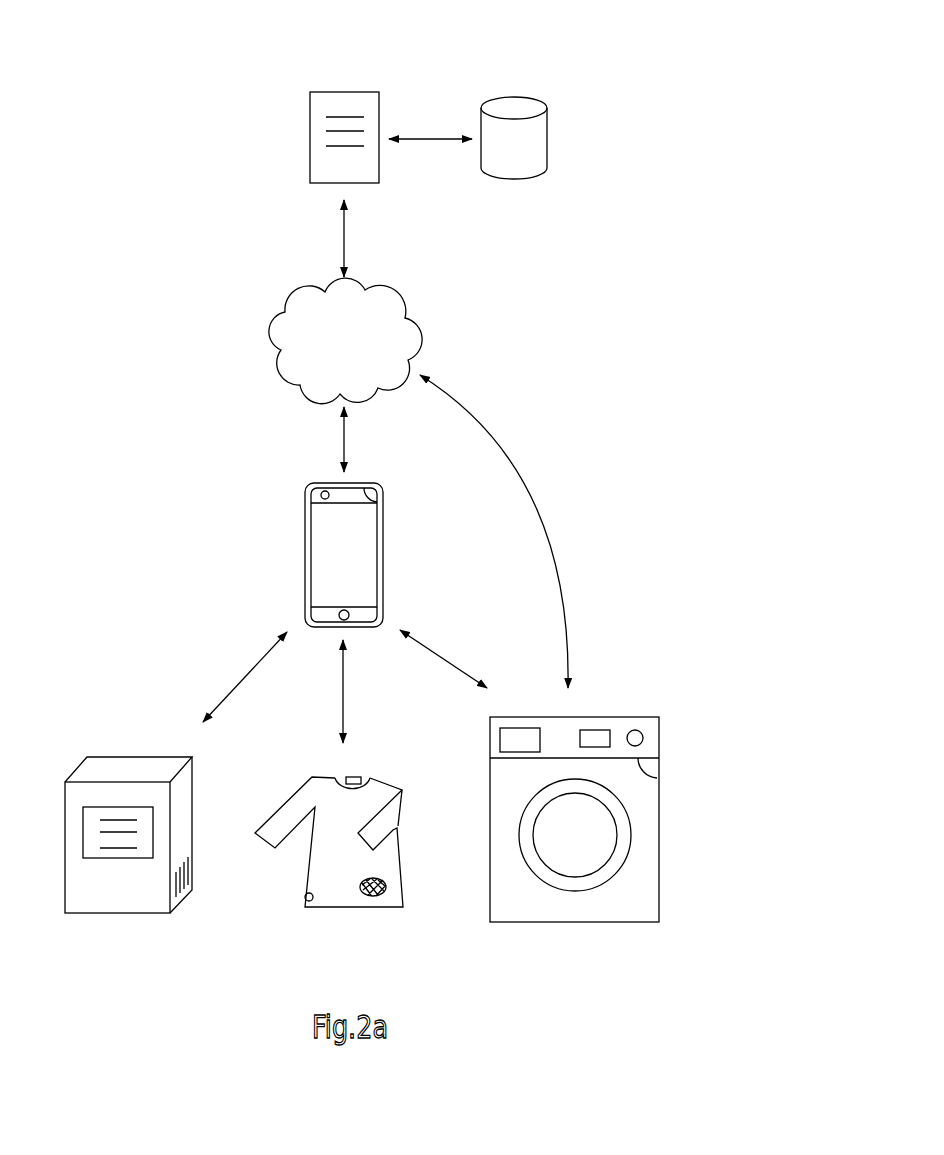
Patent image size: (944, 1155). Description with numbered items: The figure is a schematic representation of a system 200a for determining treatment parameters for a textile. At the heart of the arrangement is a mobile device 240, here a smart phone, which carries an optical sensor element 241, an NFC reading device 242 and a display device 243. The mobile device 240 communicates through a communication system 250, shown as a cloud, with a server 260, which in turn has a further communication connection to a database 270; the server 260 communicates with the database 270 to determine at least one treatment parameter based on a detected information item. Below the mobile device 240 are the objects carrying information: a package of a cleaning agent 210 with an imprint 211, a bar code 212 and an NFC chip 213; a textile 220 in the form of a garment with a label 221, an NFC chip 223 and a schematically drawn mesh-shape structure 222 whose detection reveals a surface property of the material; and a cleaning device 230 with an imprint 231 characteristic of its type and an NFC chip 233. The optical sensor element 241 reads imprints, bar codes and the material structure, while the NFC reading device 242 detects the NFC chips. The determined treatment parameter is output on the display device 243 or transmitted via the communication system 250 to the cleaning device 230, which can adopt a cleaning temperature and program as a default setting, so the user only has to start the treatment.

The system 200a is at (661, 80).
The server 260 is at (309, 145).
The database 270 is at (549, 144).
The communication system 250 is at (329, 351).
The mobile device 240 is at (307, 562).
The optical sensor element 241 is at (320, 494).
The NFC reading device 242 is at (380, 496).
The display device 243 is at (370, 563).
The package of a cleaning agent 210 is at (157, 858).
The imprint 211 is at (110, 859).
The bar code 212 is at (183, 888).
The NFC chip 213 is at (184, 770).
The textile 220 is at (325, 839).
The label 221 is at (358, 775).
The mesh-shape structure of the textile 222 is at (376, 897).
The NFC chip 223 is at (305, 895).
The cleaning device 230 is at (576, 841).
The imprint 231 is at (510, 738).
The NFC chip 233 is at (658, 766).